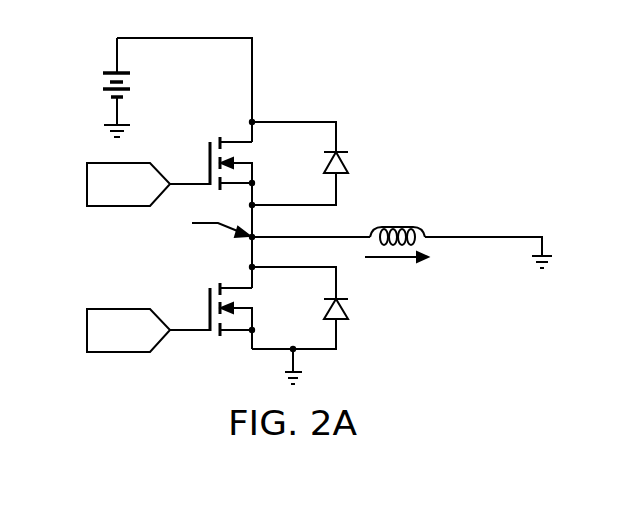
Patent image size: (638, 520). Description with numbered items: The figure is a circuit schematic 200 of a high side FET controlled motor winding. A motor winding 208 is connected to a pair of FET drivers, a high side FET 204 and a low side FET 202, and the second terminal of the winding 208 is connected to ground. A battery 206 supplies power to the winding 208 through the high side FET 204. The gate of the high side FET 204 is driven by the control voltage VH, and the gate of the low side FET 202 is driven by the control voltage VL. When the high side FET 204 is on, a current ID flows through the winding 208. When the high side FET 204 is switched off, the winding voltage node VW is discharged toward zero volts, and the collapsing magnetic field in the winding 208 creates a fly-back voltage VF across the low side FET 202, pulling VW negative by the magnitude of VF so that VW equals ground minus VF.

The schematic 200 is at (365, 70).
The low side FET 202 is at (208, 297).
The high side FET 204 is at (208, 151).
The battery 206 is at (101, 88).
The motor winding 208 is at (398, 226).